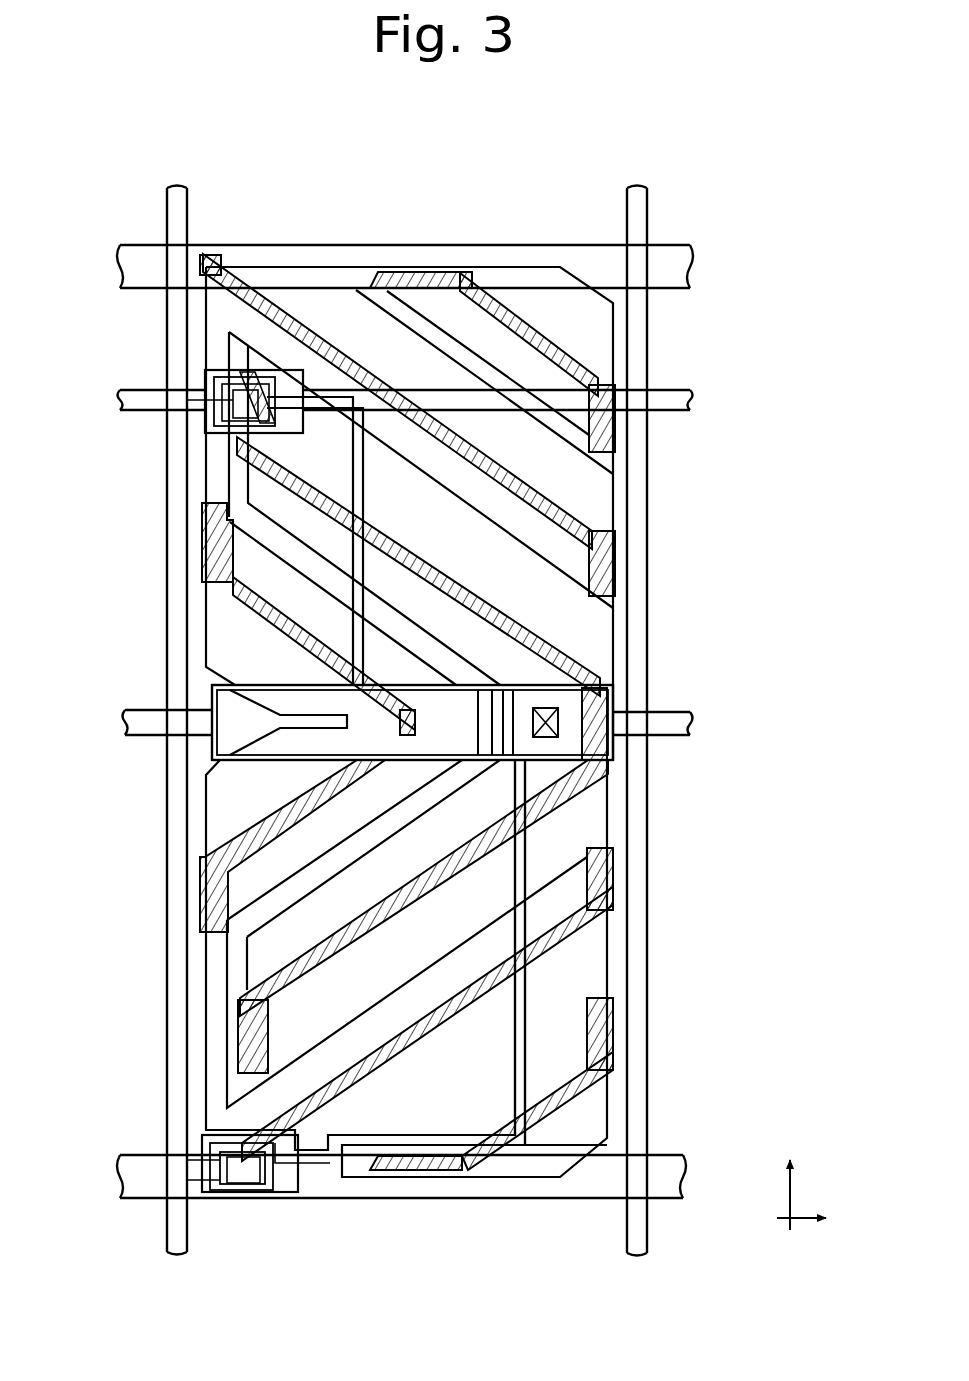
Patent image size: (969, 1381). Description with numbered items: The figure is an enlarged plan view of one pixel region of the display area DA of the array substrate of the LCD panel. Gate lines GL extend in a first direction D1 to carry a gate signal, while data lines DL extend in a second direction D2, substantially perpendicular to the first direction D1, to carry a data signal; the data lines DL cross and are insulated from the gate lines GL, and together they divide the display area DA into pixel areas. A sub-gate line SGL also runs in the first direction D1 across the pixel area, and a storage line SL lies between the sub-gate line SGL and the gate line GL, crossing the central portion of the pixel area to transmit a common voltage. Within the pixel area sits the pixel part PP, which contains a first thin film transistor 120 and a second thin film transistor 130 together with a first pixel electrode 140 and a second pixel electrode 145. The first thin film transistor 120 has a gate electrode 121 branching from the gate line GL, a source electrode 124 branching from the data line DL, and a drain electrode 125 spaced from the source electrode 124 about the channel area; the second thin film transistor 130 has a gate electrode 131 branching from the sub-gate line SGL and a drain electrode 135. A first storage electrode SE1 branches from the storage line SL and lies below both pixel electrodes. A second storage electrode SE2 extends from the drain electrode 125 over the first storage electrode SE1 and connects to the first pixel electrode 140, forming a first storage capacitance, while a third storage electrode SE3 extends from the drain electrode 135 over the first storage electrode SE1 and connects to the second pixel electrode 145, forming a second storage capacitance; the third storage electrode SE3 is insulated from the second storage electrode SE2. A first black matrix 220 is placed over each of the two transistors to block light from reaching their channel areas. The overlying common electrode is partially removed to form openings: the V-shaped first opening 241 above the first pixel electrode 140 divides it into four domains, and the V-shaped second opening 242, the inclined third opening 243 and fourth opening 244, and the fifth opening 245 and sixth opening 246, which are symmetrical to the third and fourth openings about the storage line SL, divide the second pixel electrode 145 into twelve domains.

The first thin film transistor 120 is at (360, 1266).
The gate electrode 121 is at (284, 1150).
The source electrode 124 is at (231, 1186).
The drain electrode 125 is at (318, 1172).
The second thin film transistor 130 is at (196, 419).
The gate electrode 131 is at (250, 378).
The drain electrode 135 is at (356, 395).
The first pixel electrode 140 is at (593, 803).
The second pixel electrode 145 is at (593, 952).
The first black matrix 220 is at (205, 395).
The first opening 241 is at (612, 668).
The second opening 242 is at (200, 900).
The third opening 243 is at (617, 578).
The fourth opening 244 is at (617, 425).
The fifth opening 245 is at (613, 875).
The sixth opening 246 is at (613, 1033).
The data line DL is at (167, 1025).
The gate line GL is at (692, 1182).
The sub-gate line SGL is at (692, 405).
The storage line SL is at (692, 726).
The pixel part PP is at (507, 256).
The display area DA is at (590, 322).
The first storage electrode SE1 is at (208, 690).
The second storage electrode SE2 is at (560, 765).
The third storage electrode SE3 is at (208, 702).
The first direction D1 is at (768, 1196).
The second direction D2 is at (801, 1238).